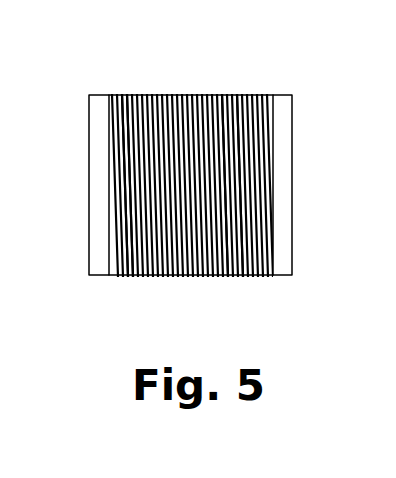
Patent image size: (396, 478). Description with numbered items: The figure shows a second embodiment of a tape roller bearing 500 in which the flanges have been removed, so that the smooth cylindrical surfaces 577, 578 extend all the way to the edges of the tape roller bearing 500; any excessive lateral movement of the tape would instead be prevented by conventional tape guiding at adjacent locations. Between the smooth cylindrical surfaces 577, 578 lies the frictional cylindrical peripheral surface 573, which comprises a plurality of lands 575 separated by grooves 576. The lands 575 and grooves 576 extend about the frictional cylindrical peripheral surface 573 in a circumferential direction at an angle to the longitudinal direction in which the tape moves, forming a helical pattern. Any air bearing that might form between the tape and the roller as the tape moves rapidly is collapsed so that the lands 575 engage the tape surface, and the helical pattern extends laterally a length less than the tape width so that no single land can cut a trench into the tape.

The tape roller bearing 500 is at (205, 175).
The frictional cylindrical peripheral surface 573 is at (130, 276).
The lands 575 is at (141, 276).
The grooves 576 is at (240, 276).
The smooth cylindrical surface 577 is at (97, 95).
The smooth cylindrical surface 578 is at (290, 95).